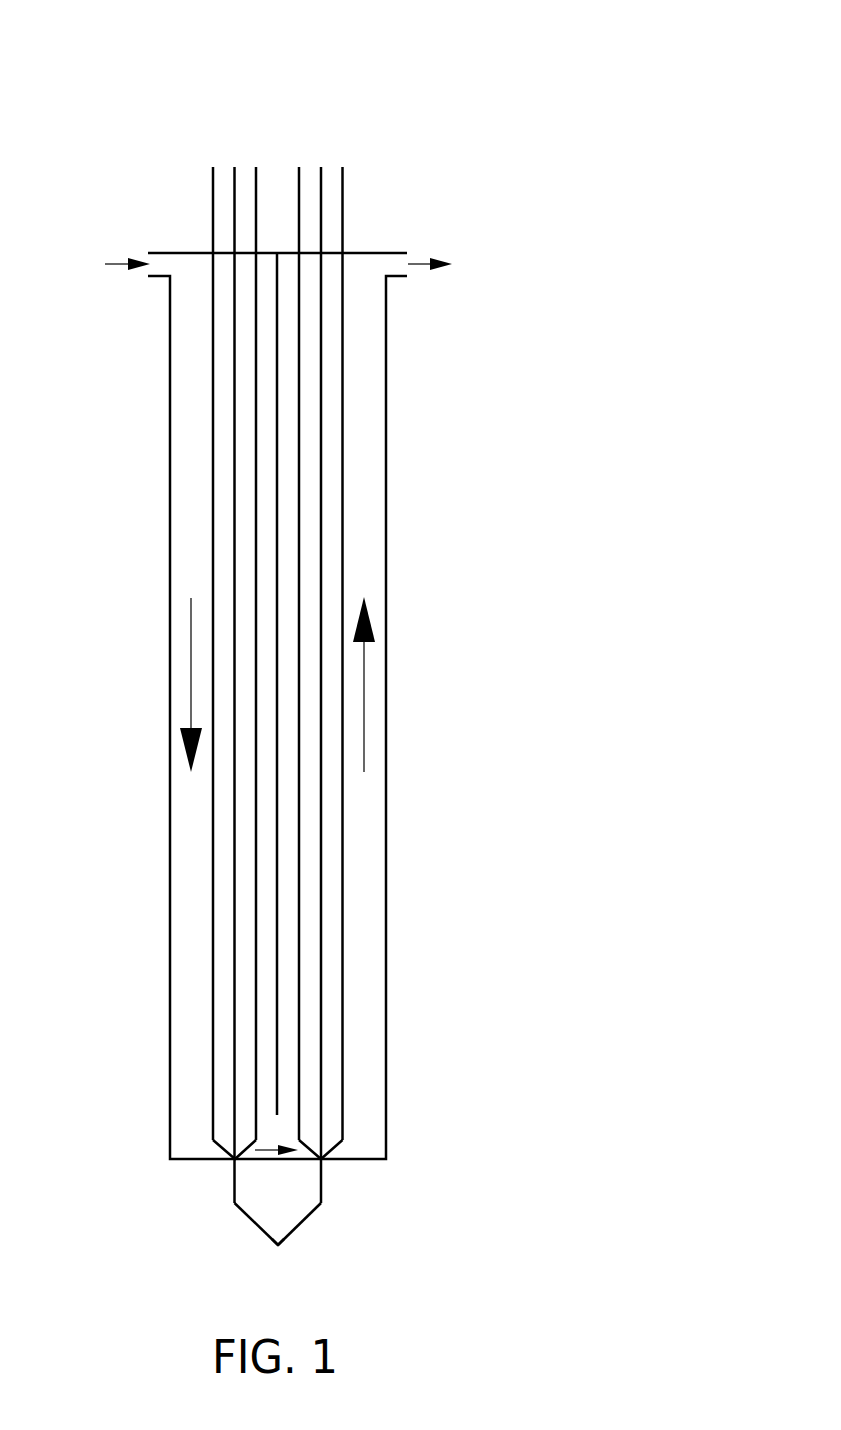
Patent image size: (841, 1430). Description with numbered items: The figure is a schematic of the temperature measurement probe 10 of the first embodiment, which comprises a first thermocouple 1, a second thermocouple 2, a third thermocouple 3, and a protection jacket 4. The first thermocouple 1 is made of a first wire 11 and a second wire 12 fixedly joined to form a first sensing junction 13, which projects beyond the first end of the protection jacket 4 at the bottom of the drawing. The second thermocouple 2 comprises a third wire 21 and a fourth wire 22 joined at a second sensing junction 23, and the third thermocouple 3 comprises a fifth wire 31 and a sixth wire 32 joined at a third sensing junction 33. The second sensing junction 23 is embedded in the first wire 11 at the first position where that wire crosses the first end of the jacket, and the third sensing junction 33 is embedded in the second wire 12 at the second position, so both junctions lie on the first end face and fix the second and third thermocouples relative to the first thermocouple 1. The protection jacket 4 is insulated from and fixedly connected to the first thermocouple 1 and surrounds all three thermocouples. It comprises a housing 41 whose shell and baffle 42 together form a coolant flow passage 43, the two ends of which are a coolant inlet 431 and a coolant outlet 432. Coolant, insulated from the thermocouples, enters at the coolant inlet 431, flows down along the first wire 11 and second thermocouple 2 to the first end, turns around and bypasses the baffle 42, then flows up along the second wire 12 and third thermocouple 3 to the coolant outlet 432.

The temperature measurement probe 10 is at (125, 27).
The first thermocouple 1 is at (398, 1280).
The first wire 11 is at (250, 1225).
The second wire 12 is at (303, 1224).
The first sensing junction 13 is at (282, 1248).
The second thermocouple 2 is at (137, 102).
The third wire 21 is at (212, 188).
The fourth wire 22 is at (256, 178).
The second sensing junction 23 is at (232, 1161).
The third thermocouple 3 is at (418, 102).
The fifth wire 31 is at (300, 178).
The sixth wire 32 is at (357, 180).
The third sensing junction 33 is at (325, 1161).
The protection jacket 4 is at (486, 415).
The housing 41 is at (387, 470).
The baffle 42 is at (279, 489).
The coolant flow passage 43 is at (364, 405).
The coolant inlet 431 is at (155, 263).
The coolant outlet 432 is at (408, 262).